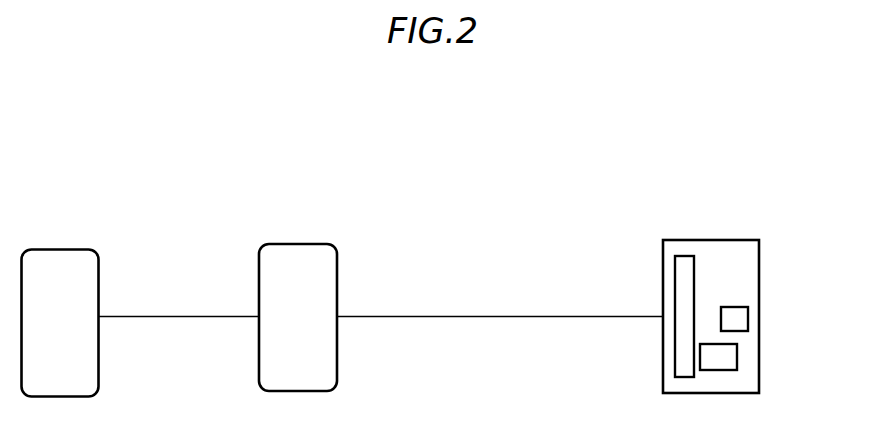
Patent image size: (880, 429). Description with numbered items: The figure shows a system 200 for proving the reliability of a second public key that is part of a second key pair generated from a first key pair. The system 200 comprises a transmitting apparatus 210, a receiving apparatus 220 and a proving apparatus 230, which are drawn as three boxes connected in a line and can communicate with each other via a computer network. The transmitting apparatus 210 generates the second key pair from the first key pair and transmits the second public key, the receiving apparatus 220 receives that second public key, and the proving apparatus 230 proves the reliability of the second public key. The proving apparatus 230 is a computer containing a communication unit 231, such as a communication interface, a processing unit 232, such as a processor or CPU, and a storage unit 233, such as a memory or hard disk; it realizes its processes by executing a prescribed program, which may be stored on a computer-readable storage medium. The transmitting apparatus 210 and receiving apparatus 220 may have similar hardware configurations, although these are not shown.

The system 200 is at (655, 195).
The transmitting apparatus 210 is at (99, 289).
The receiving apparatus 220 is at (337, 289).
The proving apparatus 230 is at (759, 282).
The communication unit 231 is at (675, 288).
The processing unit 232 is at (748, 319).
The storage unit 233 is at (737, 357).